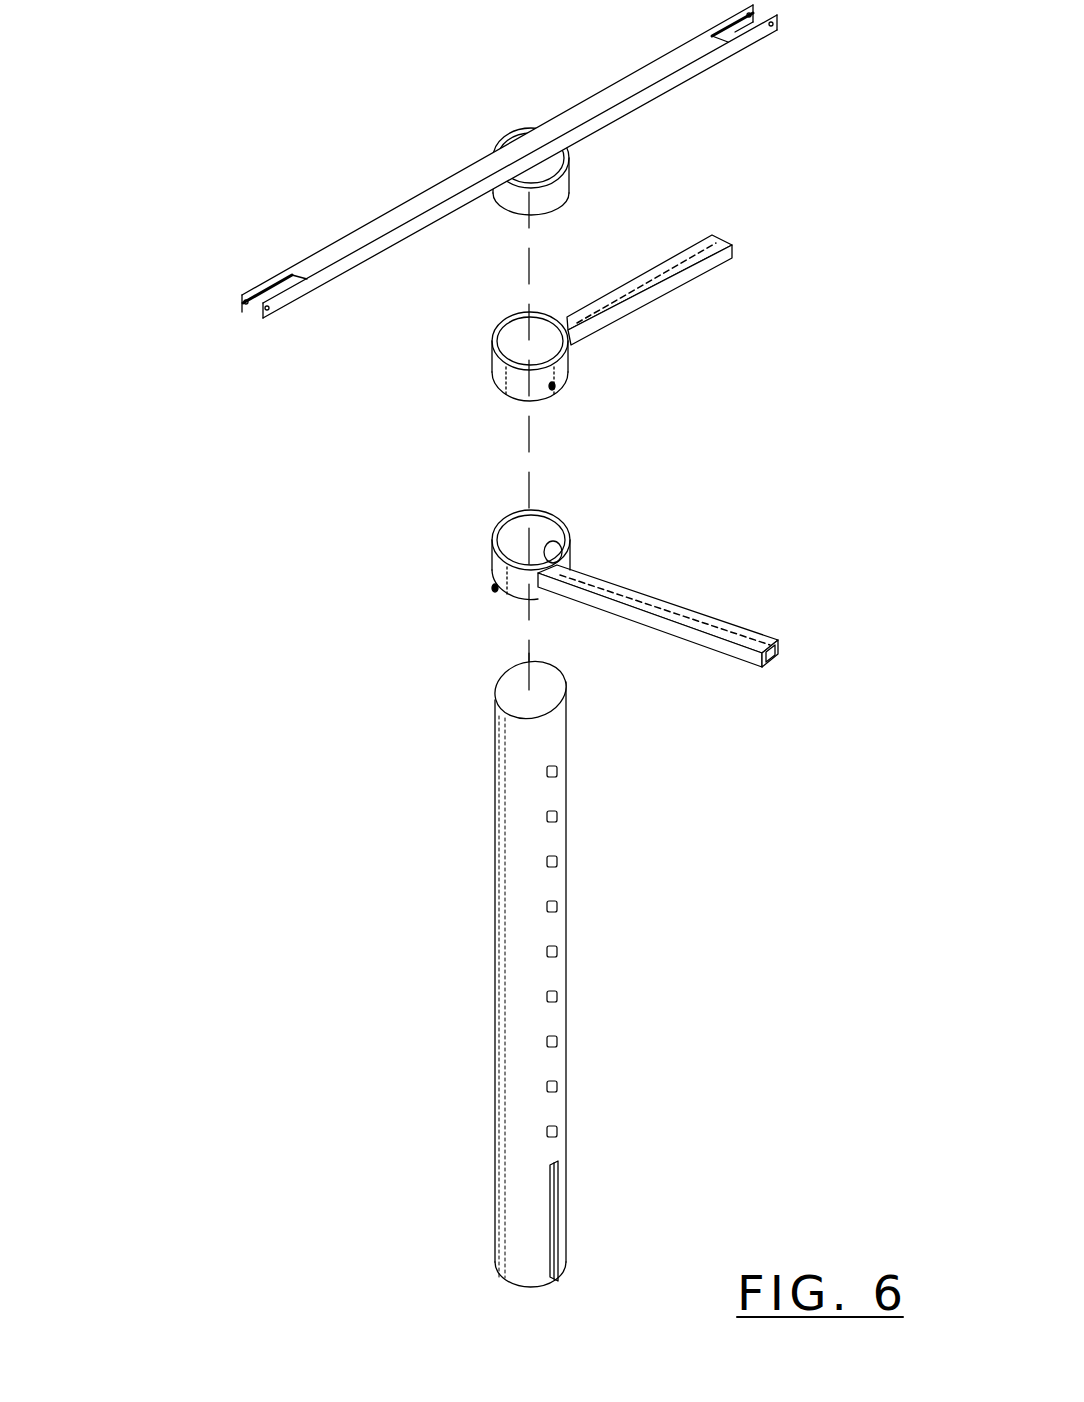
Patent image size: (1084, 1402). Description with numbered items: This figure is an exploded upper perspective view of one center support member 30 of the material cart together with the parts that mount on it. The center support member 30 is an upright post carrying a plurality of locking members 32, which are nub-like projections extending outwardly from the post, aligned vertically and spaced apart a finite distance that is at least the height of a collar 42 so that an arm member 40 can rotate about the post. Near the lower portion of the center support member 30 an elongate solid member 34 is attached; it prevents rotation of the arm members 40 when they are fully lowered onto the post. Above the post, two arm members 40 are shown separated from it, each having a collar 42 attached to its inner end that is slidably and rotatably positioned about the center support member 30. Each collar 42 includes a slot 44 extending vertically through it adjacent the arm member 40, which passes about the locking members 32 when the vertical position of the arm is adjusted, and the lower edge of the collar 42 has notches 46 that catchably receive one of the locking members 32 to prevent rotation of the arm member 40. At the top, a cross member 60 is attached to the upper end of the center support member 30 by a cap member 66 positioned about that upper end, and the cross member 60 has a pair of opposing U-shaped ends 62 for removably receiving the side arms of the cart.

The center support member 30 is at (553, 970).
The locking member 32 is at (558, 813).
The elongate solid member 34 is at (553, 1202).
The arm member 40 is at (597, 400).
The collar 42 is at (493, 374).
The slot 44 is at (567, 317).
The notch 46 is at (555, 387).
The cross member 60 is at (466, 207).
The U-shaped end 62 is at (246, 306).
The cap member 66 is at (520, 132).